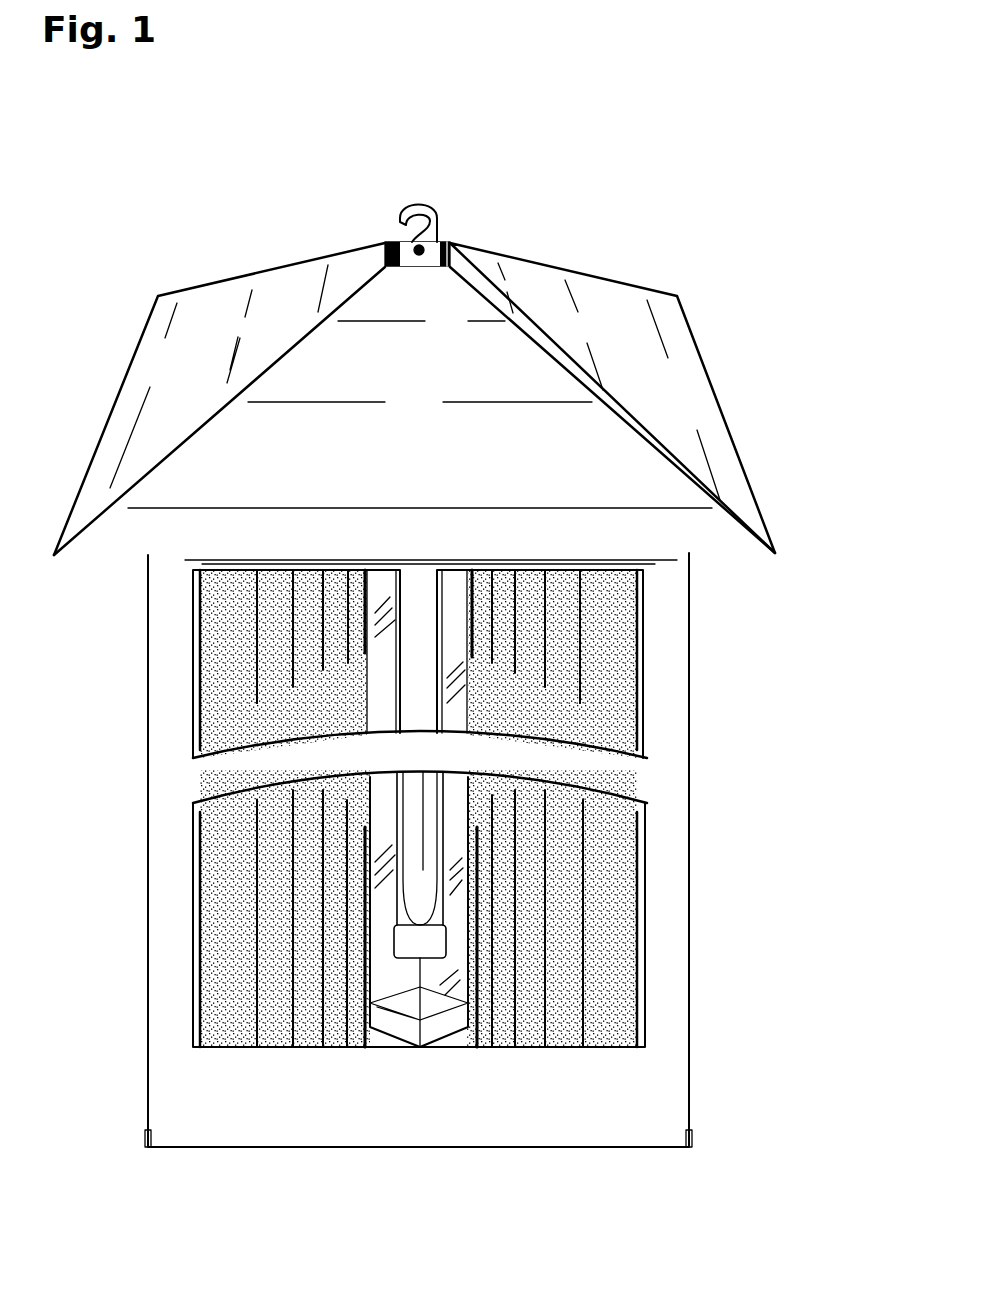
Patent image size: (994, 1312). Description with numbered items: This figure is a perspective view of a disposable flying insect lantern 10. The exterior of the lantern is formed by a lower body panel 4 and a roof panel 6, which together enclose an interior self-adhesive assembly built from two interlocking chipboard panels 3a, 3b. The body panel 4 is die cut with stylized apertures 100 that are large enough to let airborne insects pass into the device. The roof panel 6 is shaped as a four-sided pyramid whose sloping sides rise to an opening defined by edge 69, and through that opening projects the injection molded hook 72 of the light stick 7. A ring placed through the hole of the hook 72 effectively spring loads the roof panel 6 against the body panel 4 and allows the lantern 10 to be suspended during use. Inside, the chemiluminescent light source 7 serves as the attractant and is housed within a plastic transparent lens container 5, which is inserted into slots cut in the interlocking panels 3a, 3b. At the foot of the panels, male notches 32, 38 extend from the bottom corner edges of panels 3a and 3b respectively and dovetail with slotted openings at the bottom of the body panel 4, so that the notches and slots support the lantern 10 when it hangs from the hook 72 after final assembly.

The disposable flying insect lantern 10 is at (703, 239).
The roof panel 6 is at (727, 463).
The edge 69 is at (386, 246).
The injection molded hook 72 is at (415, 205).
The interlocking panel 3a is at (238, 628).
The interlocking panel 3b is at (560, 928).
The body panel 4 is at (633, 773).
The chemiluminescent light source 7 is at (393, 910).
The transparent lens container 5 is at (450, 1007).
The stylized apertures 100 is at (193, 740).
The male notch 32 is at (150, 1148).
The male notch 38 is at (687, 1148).